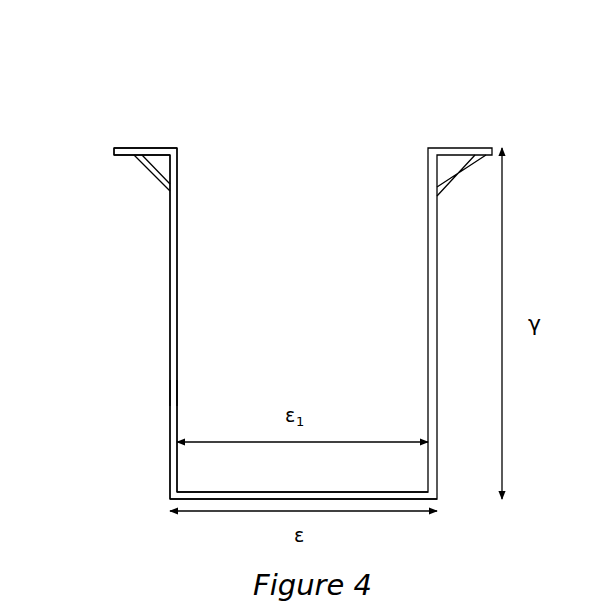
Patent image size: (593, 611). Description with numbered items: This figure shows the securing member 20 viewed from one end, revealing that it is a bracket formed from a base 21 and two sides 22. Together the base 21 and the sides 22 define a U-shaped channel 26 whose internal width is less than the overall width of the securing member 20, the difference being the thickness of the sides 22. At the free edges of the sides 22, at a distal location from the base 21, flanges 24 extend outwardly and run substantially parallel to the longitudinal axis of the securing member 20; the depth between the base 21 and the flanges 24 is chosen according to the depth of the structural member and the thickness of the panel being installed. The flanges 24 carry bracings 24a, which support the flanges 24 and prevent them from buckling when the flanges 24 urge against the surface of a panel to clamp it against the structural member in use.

The securing member 20 is at (495, 118).
The base 21 is at (190, 488).
The sides 22 is at (168, 343).
The flanges 24 is at (147, 175).
The bracings 24a is at (147, 174).
The U-shaped channel 26 is at (198, 393).